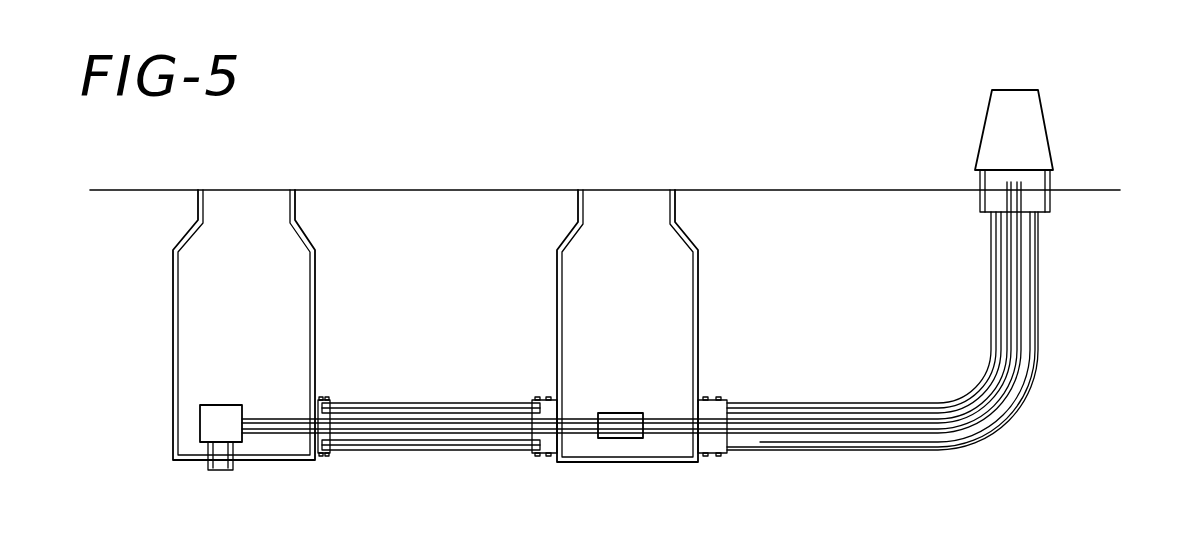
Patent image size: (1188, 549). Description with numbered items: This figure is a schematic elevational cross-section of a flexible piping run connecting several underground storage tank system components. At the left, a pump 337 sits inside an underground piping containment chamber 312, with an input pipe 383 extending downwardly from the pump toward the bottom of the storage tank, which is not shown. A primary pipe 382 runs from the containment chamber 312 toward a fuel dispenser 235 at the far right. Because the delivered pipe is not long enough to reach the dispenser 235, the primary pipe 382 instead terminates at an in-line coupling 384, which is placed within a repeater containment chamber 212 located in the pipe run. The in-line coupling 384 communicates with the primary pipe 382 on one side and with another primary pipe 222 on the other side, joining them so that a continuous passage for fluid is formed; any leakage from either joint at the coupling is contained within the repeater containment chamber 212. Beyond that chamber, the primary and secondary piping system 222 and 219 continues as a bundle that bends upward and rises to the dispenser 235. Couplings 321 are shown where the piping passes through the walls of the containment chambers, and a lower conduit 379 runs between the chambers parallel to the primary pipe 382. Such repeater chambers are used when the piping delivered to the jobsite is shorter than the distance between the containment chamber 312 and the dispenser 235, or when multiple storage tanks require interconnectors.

The piping containment chamber 312 is at (317, 280).
The repeater containment chamber 212 is at (698, 278).
The fuel dispenser 235 is at (1045, 117).
The primary pipe 382 is at (435, 403).
The coupling fitting 321 is at (343, 403).
The pump 337 is at (215, 405).
The input pipe 383 is at (215, 472).
The lower conduit sleeve 379 is at (422, 452).
The in-line coupling 384 is at (622, 440).
The primary pipe 222 is at (843, 427).
The secondary piping system 219 is at (953, 450).